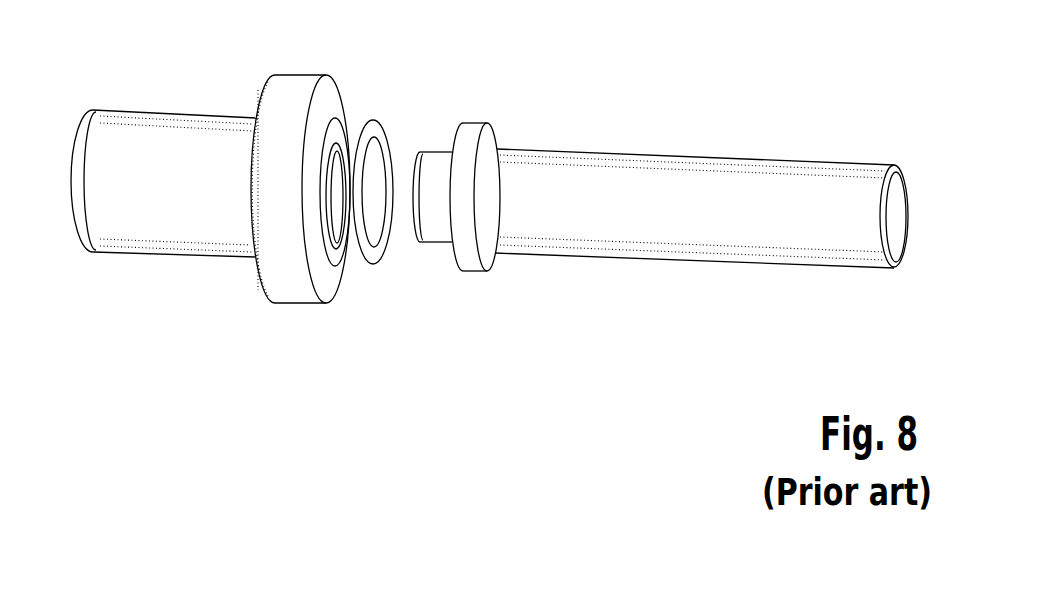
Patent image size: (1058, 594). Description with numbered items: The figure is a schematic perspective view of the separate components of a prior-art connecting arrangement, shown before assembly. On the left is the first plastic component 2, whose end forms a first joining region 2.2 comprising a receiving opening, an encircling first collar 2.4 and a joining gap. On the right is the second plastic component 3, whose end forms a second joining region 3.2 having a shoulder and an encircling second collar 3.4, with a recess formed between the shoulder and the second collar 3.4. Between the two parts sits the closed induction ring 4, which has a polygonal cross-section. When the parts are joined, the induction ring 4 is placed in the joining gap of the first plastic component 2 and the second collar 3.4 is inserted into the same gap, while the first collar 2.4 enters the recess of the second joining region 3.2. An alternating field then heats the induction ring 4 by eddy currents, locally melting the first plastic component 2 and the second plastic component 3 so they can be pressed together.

The first plastic component 2 is at (167, 122).
The first joining region 2.2 is at (362, 296).
The first collar 2.4 is at (345, 142).
The second plastic component 3 is at (696, 160).
The second joining region 3.2 is at (498, 84).
The second collar 3.4 is at (452, 143).
The induction ring 4 is at (380, 244).